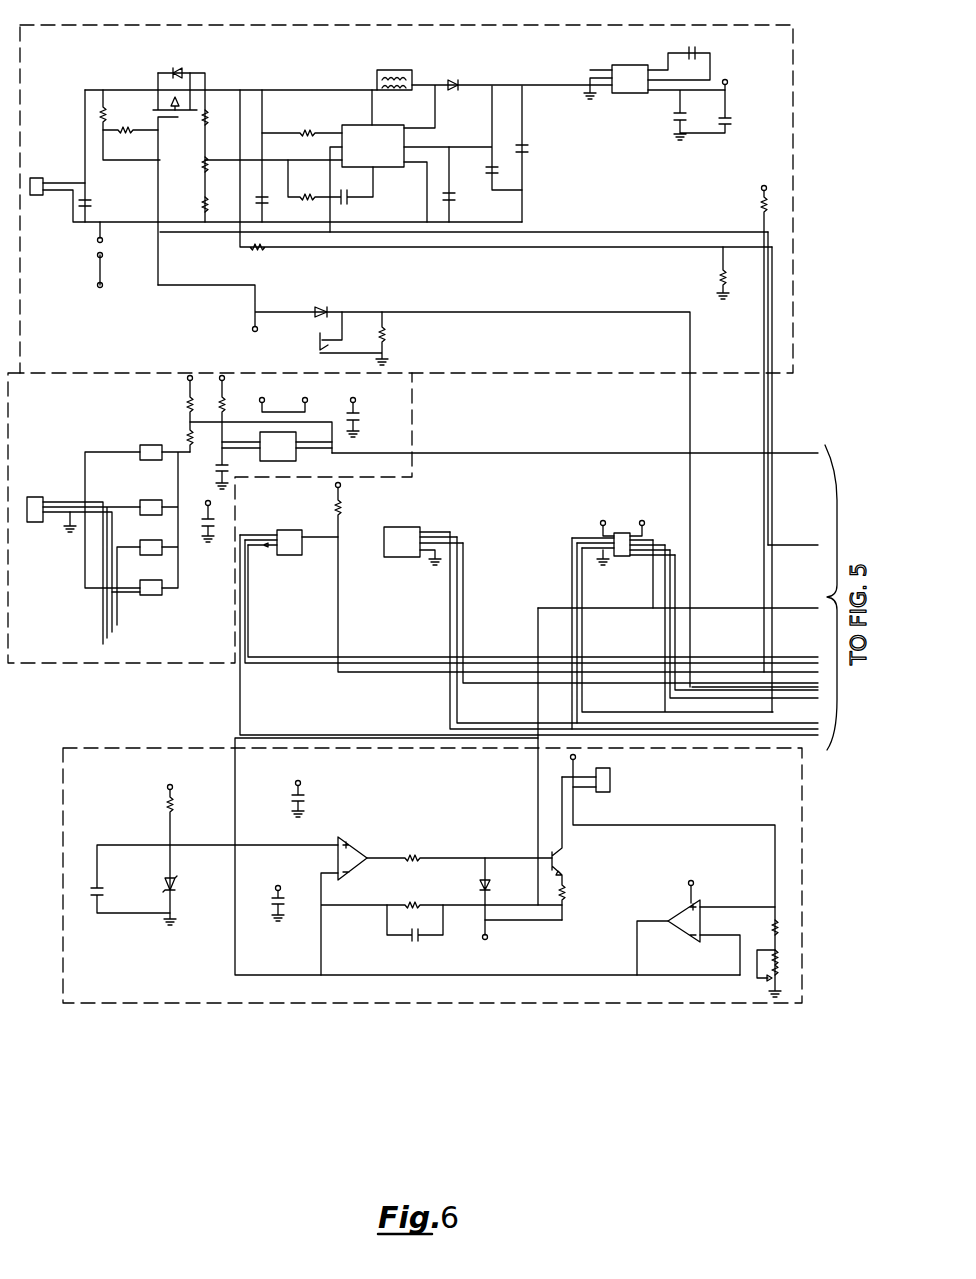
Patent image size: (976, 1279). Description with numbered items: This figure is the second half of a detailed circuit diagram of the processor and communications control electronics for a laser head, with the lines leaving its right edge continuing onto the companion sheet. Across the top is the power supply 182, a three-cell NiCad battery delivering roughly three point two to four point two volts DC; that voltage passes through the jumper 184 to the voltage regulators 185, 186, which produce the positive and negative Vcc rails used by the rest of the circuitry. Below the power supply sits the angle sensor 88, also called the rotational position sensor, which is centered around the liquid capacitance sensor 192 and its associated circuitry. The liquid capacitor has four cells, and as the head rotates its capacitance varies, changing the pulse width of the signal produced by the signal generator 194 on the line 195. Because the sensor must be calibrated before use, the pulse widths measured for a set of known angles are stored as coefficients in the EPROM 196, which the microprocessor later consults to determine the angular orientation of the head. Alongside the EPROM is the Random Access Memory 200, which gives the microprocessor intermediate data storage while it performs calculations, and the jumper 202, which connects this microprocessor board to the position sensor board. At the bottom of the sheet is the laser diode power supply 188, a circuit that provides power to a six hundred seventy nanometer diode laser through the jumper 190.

The power supply 182 is at (793, 87).
The jumper 184 is at (43, 177).
The voltage regulator 185 is at (357, 123).
The voltage regulator 186 is at (623, 65).
The laser diode power supply 188 is at (732, 1003).
The jumper 190 is at (610, 780).
The liquid capacitance sensor 192 is at (35, 525).
The signal generator 194 is at (293, 460).
The line 195 is at (507, 452).
The EPROM 196 is at (295, 557).
The Random Access Memory (RAM) 200 is at (397, 557).
The jumper 202 is at (622, 530).
The angle sensor 88 is at (22, 663).